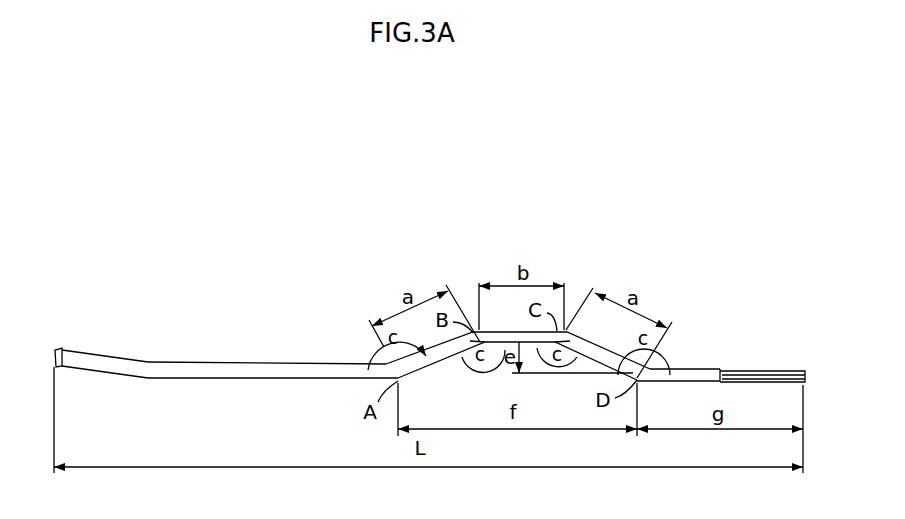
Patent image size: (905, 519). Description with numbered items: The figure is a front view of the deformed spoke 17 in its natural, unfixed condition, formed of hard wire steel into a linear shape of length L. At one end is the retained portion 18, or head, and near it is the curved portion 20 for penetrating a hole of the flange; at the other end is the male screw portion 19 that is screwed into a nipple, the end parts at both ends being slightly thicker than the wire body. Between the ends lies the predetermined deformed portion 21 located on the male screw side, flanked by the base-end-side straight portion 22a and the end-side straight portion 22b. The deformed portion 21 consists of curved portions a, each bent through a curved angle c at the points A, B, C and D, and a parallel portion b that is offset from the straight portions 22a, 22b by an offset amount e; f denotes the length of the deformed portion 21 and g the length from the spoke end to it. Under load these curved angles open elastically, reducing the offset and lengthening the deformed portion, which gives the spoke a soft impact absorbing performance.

The deformed spoke 17 is at (417, 301).
The retained portion 18 is at (59, 356).
The male screw portion 19 is at (765, 370).
The curved portion 20 is at (90, 352).
The deformed portion 21 is at (578, 286).
The base-end-side straight portion 22a is at (198, 362).
The end-side straight portion 22b is at (692, 369).